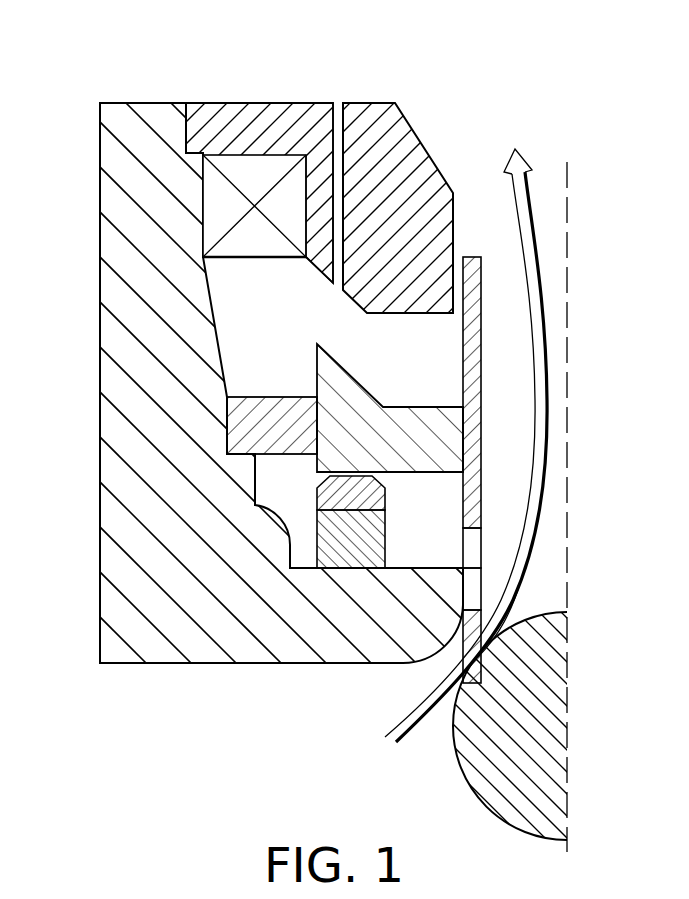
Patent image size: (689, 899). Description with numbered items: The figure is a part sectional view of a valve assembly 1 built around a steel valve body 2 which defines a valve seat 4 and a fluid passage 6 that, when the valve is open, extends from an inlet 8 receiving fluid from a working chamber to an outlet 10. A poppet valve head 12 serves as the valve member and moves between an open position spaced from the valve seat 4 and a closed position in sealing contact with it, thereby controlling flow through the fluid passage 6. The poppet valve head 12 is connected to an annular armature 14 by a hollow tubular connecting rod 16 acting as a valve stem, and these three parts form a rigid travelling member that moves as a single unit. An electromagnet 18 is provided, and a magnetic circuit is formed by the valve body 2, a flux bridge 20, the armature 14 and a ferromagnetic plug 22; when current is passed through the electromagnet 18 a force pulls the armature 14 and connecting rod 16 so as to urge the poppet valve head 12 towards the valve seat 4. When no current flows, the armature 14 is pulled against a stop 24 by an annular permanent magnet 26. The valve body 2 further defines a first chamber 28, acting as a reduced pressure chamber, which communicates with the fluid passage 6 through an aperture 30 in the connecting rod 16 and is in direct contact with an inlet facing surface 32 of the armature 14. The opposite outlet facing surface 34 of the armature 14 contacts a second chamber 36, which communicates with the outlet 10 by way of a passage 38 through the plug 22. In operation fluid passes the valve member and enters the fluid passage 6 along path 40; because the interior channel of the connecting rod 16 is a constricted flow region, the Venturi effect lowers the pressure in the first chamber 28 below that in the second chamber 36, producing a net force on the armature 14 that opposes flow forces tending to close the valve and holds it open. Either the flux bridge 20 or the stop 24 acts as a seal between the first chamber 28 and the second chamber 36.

The valve assembly 1 is at (71, 66).
The valve body 2 is at (100, 118).
The valve seat 4 is at (447, 657).
The fluid passage 6 is at (528, 411).
The inlet 8 is at (346, 794).
The outlet 10 is at (496, 129).
The poppet valve head 12 is at (562, 638).
The annular armature 14 is at (317, 355).
The tubular connecting rod 16 is at (481, 272).
The electromagnet 18 is at (222, 142).
The flux bridge 20 is at (227, 437).
The ferromagnetic plug 22 is at (367, 103).
The stop 24 is at (353, 476).
The annular permanent magnet 26 is at (318, 562).
The first chamber 28 is at (442, 518).
The aperture 30 is at (482, 543).
The inlet facing surface 32 is at (412, 472).
The outlet facing surface 34 is at (405, 407).
The second chamber 36 is at (440, 355).
The passage 38 is at (316, 134).
The path 40 is at (521, 580).